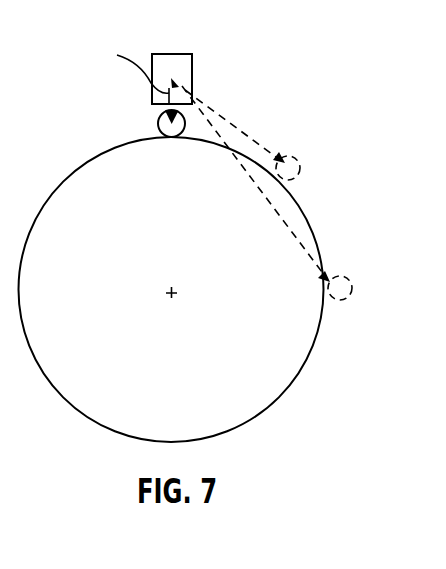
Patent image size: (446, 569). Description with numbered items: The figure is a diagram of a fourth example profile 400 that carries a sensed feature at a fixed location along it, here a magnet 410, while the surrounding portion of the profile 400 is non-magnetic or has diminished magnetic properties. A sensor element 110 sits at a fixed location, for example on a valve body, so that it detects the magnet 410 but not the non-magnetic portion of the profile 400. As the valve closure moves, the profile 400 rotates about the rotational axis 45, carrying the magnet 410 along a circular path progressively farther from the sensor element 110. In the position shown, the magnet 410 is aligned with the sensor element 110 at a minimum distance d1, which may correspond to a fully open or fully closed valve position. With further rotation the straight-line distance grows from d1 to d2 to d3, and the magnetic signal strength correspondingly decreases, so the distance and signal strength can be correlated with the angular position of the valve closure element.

The profile 400 is at (320, 129).
The rotational axis 45 is at (173, 295).
The magnet 410 is at (159, 121).
The sensor element 110 is at (182, 62).
The minimum distance d1 is at (128, 70).
The second distance d2 is at (224, 120).
The third distance d3 is at (278, 214).